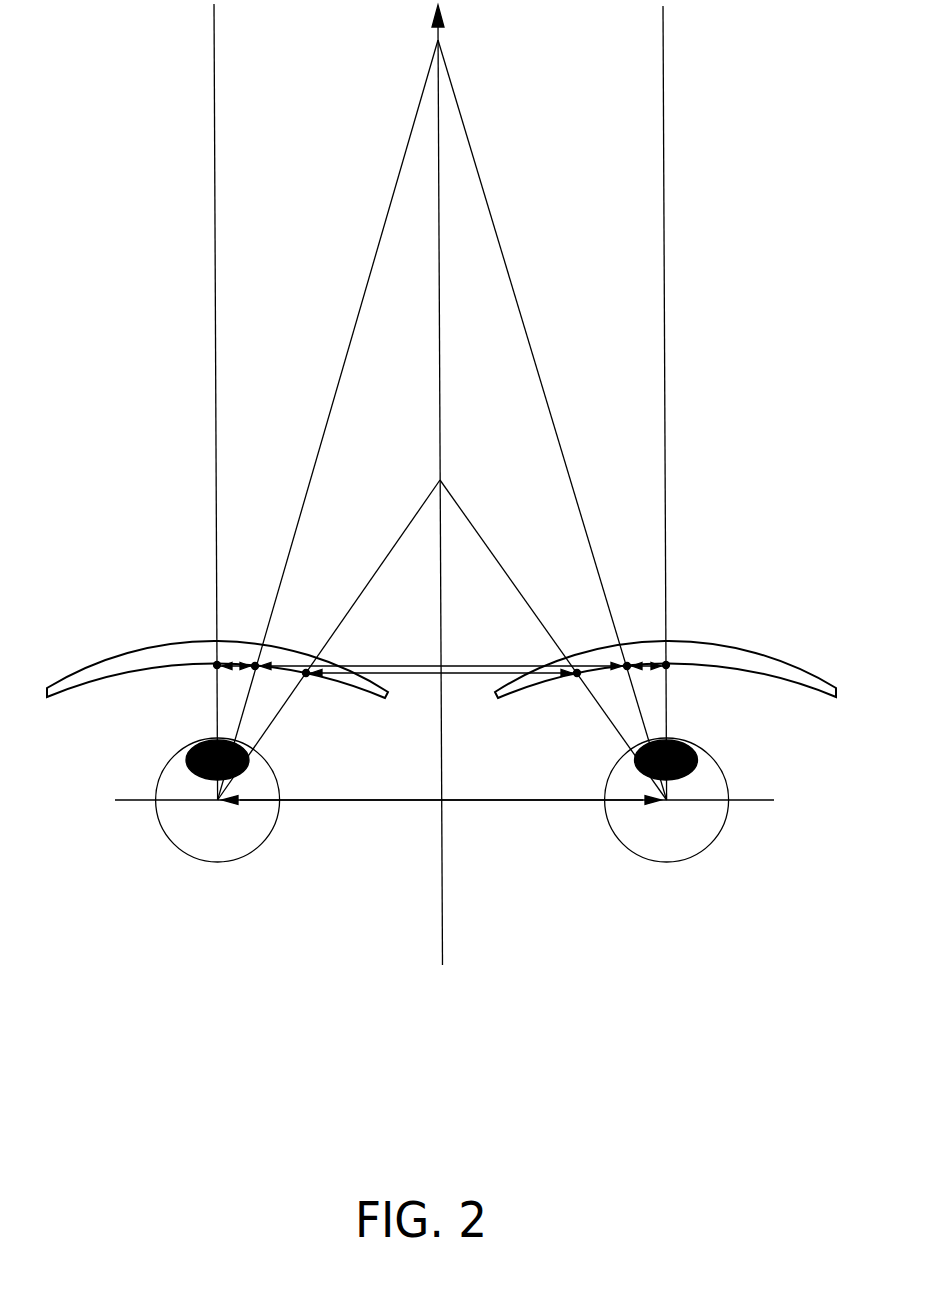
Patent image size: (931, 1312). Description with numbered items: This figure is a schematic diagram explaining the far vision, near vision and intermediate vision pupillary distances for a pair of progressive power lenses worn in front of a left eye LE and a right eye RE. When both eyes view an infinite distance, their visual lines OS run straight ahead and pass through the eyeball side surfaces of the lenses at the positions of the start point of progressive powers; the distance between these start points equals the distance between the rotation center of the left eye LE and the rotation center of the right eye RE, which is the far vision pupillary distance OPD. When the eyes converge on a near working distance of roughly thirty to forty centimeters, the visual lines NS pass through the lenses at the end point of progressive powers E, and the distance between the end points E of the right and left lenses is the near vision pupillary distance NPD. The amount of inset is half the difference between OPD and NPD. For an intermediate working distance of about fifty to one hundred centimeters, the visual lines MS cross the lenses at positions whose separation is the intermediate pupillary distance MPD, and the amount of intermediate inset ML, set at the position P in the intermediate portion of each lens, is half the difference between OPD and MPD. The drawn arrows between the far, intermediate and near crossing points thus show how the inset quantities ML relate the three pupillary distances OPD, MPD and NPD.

The visual line for infinite distance OS is at (215, 337).
The visual line for intermediate working distance MS is at (361, 300).
The visual line for near working distance NS is at (400, 535).
The amount of intermediate inset ML is at (237, 660).
The intermediate pupillary distance MPD is at (470, 660).
The near vision pupillary distance NPD is at (478, 677).
The end point of progressive powers E is at (308, 676).
The set position of the amount of intermediate inset P is at (257, 668).
The left eye LE is at (216, 845).
The right eye RE is at (666, 845).
The far vision pupillary distance OPD is at (392, 802).